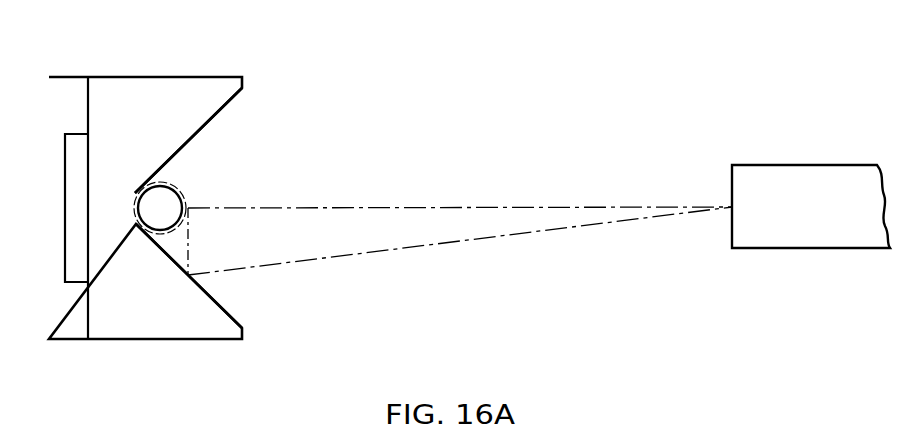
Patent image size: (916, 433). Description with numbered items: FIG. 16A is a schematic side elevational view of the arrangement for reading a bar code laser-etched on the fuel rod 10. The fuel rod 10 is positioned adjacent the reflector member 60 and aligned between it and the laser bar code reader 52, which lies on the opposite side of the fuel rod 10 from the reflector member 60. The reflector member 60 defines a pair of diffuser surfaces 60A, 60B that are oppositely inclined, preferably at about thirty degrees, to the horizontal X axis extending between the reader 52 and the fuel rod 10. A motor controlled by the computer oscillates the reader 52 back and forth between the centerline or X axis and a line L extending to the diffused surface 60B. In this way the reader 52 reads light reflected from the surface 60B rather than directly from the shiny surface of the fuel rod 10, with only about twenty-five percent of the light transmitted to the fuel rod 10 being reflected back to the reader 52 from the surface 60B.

The reflector member 60 is at (145, 77).
The diffuser surface 60A is at (207, 120).
The diffuser surface 60B is at (223, 310).
The fuel rod 10 is at (183, 187).
The horizontal X axis X is at (413, 207).
The line L is at (532, 232).
The laser bar code reader 52 is at (828, 248).